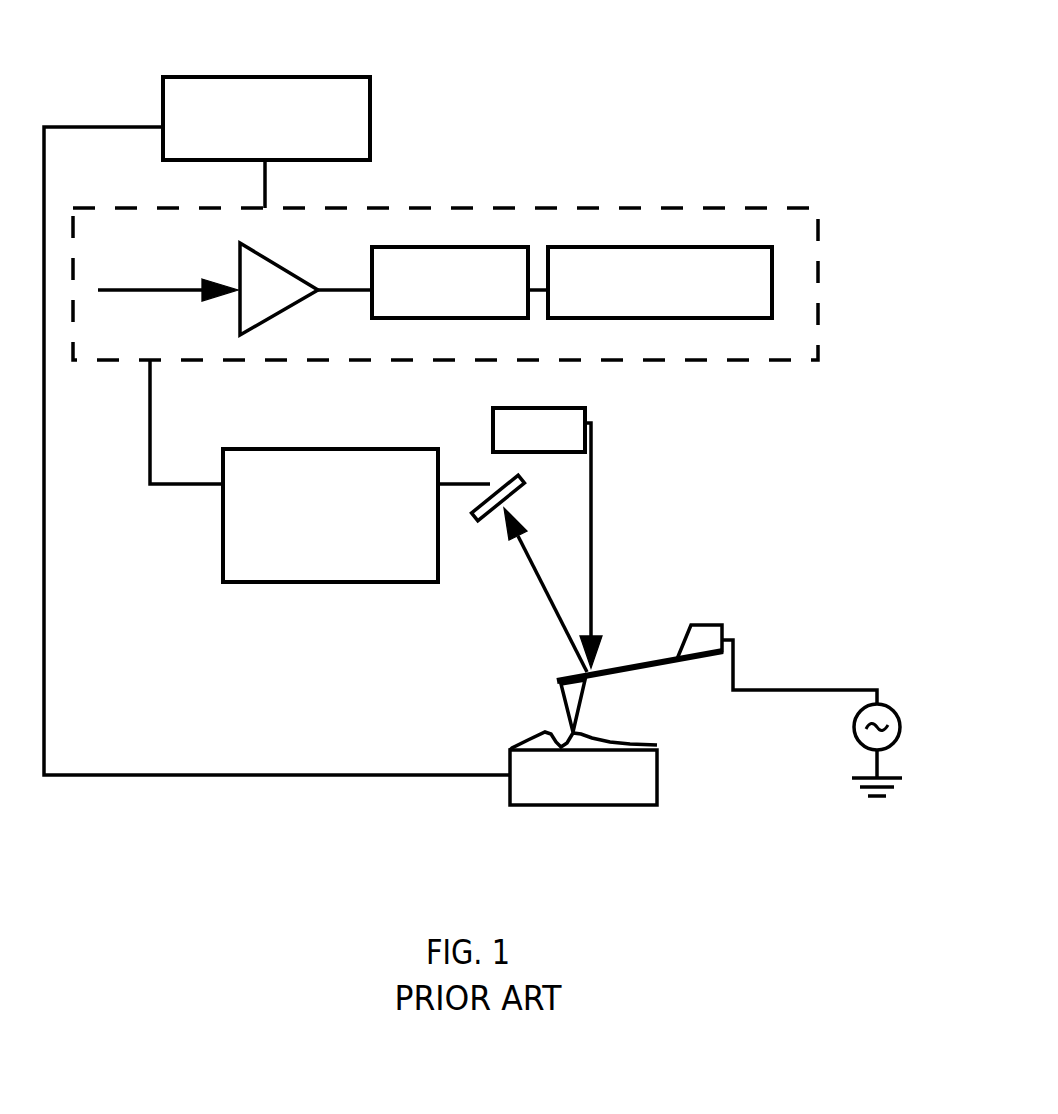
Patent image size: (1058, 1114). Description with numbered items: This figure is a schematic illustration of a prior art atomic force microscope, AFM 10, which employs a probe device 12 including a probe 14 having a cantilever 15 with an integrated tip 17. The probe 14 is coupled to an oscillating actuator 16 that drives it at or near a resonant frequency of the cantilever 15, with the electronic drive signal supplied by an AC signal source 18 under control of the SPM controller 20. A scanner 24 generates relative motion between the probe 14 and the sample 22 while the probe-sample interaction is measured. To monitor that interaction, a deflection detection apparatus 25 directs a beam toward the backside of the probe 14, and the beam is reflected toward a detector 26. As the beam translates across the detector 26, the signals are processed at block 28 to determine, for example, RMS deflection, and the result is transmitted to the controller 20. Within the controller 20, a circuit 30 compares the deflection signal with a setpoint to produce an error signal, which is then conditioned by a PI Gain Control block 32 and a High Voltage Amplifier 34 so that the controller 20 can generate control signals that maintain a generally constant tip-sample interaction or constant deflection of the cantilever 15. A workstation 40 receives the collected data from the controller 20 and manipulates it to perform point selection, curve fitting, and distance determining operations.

The AFM 10 is at (640, 63).
The probe device 12 is at (756, 588).
The probe 14 is at (624, 690).
The cantilever 15 is at (648, 660).
The oscillating actuator 16 is at (694, 650).
The tip 17 is at (562, 705).
The AC signal source 18 is at (901, 727).
The SPM controller 20 is at (617, 200).
The sample 22 is at (512, 746).
The scanner 24 is at (605, 806).
The deflection detection apparatus 25 is at (478, 443).
The detector 26 is at (491, 513).
The signal processing block 28 is at (297, 449).
The comparison circuit 30 is at (299, 300).
The PI Gain Control block 32 is at (448, 247).
The High Voltage Amplifier 34 is at (562, 247).
The workstation 40 is at (328, 77).